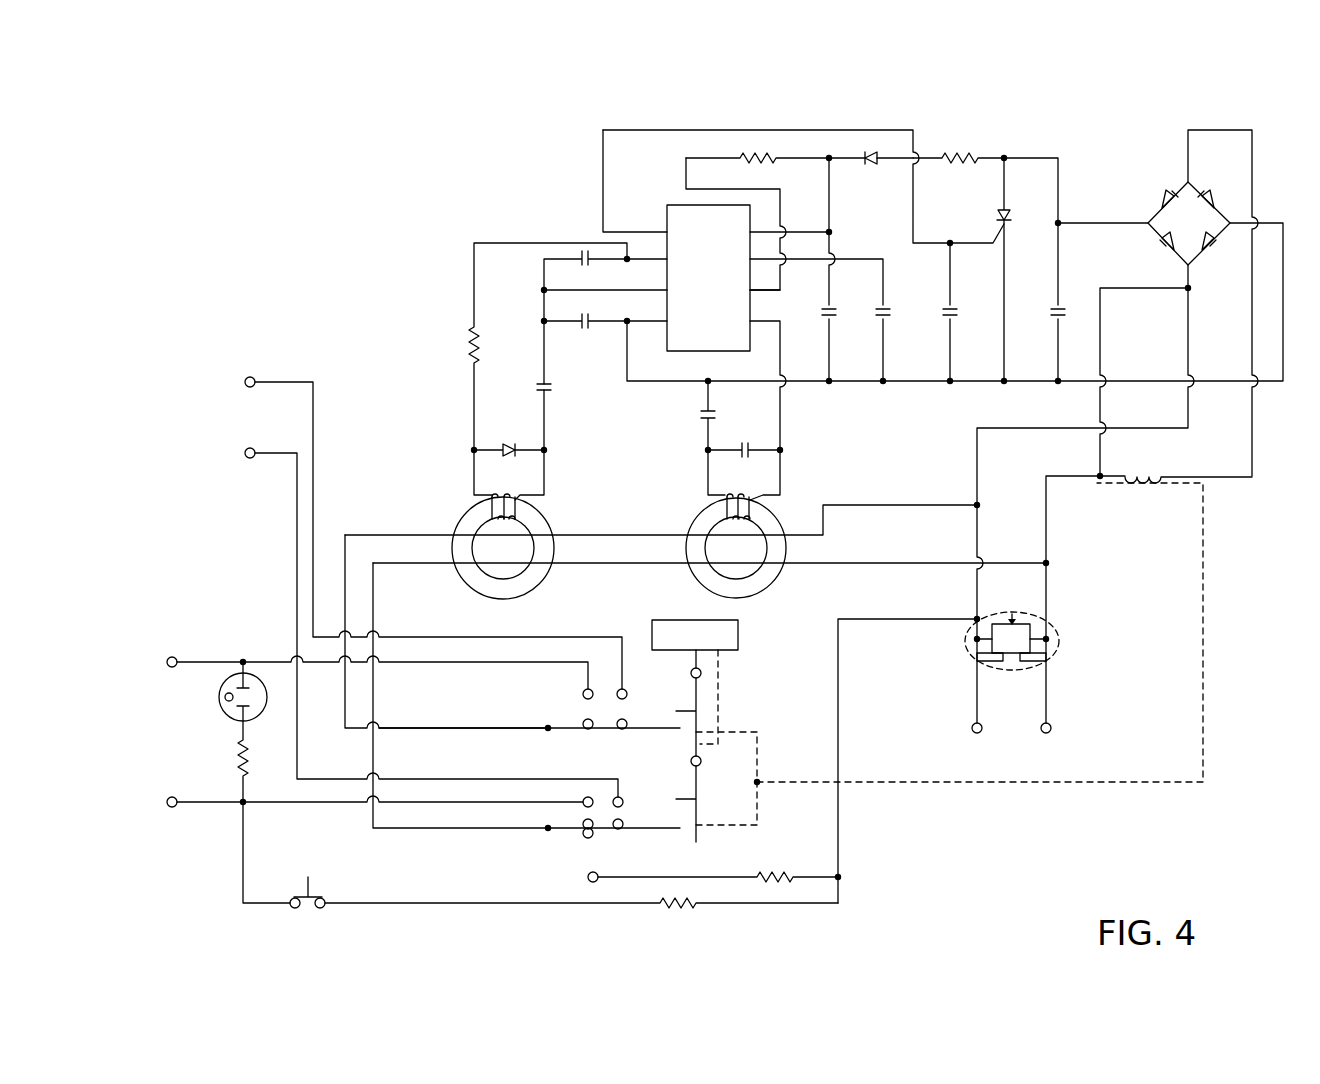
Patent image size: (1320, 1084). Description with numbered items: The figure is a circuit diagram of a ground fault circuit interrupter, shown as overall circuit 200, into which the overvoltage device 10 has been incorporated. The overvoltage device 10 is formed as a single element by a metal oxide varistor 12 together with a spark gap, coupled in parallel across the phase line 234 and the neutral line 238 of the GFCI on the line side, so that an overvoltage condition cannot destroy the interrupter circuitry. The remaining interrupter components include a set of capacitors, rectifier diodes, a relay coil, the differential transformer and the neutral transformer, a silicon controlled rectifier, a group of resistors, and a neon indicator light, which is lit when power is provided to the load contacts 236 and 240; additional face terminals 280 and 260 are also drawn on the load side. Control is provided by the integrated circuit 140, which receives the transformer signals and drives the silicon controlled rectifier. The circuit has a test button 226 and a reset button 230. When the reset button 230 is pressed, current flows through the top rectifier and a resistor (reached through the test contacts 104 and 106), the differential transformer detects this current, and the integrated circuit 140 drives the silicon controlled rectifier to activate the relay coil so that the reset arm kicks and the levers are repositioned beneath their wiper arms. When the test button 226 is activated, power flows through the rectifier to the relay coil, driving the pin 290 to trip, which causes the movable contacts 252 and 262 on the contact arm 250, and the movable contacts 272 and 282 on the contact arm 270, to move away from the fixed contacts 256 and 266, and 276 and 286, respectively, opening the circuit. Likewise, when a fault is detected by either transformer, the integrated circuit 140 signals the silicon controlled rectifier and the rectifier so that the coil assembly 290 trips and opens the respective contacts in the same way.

The GFCI circuit 200 is at (360, 136).
The integrated circuit 140 is at (672, 205).
The face terminal 280 is at (248, 377).
The face terminal 260 is at (248, 448).
The load contact 240 is at (172, 657).
The load contact 236 is at (172, 808).
The test button 226 is at (326, 884).
The test contact 106 is at (597, 884).
The test contact 104 is at (588, 840).
The movable contact 262 is at (618, 830).
The movable contact 252 is at (583, 824).
The fixed contact 256 is at (583, 802).
The fixed contact 266 is at (622, 797).
The movable contact 272 is at (588, 730).
The movable contact 282 is at (624, 730).
The contact arm 270 is at (455, 730).
The fixed contact 276 is at (584, 691).
The fixed contact 286 is at (625, 689).
The contact arm 250 is at (670, 829).
The reset button 230 is at (753, 622).
The overvoltage device 10 is at (1069, 621).
The MOV 12 is at (1040, 632).
The neutral line 238 is at (972, 723).
The phase line 234 is at (1050, 723).
The pin / coil assembly 290 is at (1145, 492).